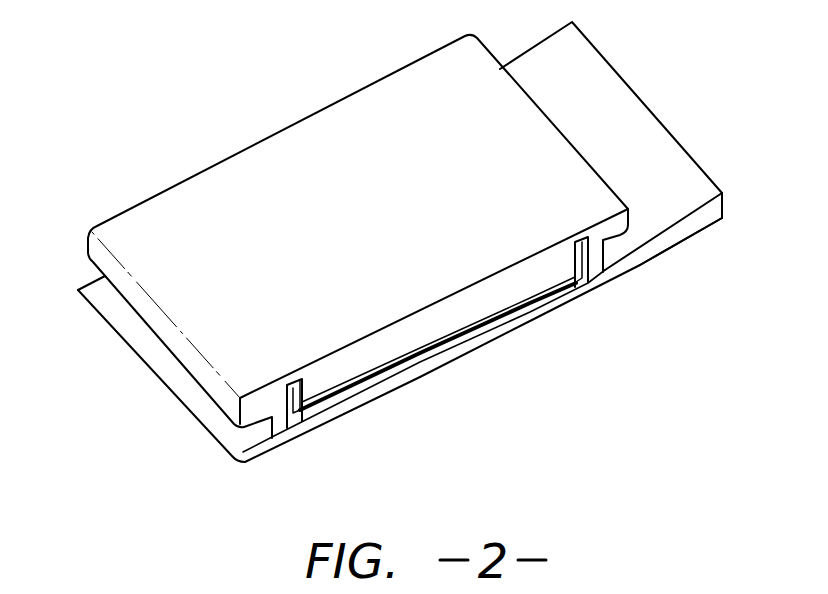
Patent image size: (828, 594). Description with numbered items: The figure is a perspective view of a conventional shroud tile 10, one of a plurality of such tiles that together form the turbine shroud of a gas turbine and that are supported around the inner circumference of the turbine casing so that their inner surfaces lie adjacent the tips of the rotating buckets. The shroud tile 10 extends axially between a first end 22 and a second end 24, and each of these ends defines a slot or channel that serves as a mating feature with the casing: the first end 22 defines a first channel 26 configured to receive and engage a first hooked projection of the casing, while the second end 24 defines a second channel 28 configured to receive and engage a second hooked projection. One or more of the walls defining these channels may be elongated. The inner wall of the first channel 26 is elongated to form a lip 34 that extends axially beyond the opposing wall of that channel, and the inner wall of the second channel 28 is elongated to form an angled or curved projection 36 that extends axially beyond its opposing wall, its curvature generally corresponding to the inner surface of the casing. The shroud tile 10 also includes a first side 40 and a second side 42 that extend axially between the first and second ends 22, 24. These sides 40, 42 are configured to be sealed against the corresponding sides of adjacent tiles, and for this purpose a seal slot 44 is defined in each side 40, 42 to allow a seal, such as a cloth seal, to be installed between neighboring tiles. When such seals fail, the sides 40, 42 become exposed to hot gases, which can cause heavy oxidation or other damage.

The shroud tile 10 is at (206, 87).
The first end 22 is at (92, 245).
The second end 24 is at (622, 78).
The first channel 26 is at (247, 445).
The second channel 28 is at (613, 247).
The lip 34 is at (192, 418).
The angled or curved projection 36 is at (693, 227).
The first side 40 is at (515, 290).
The second side 42 is at (378, 84).
The seal slot 44 is at (442, 353).